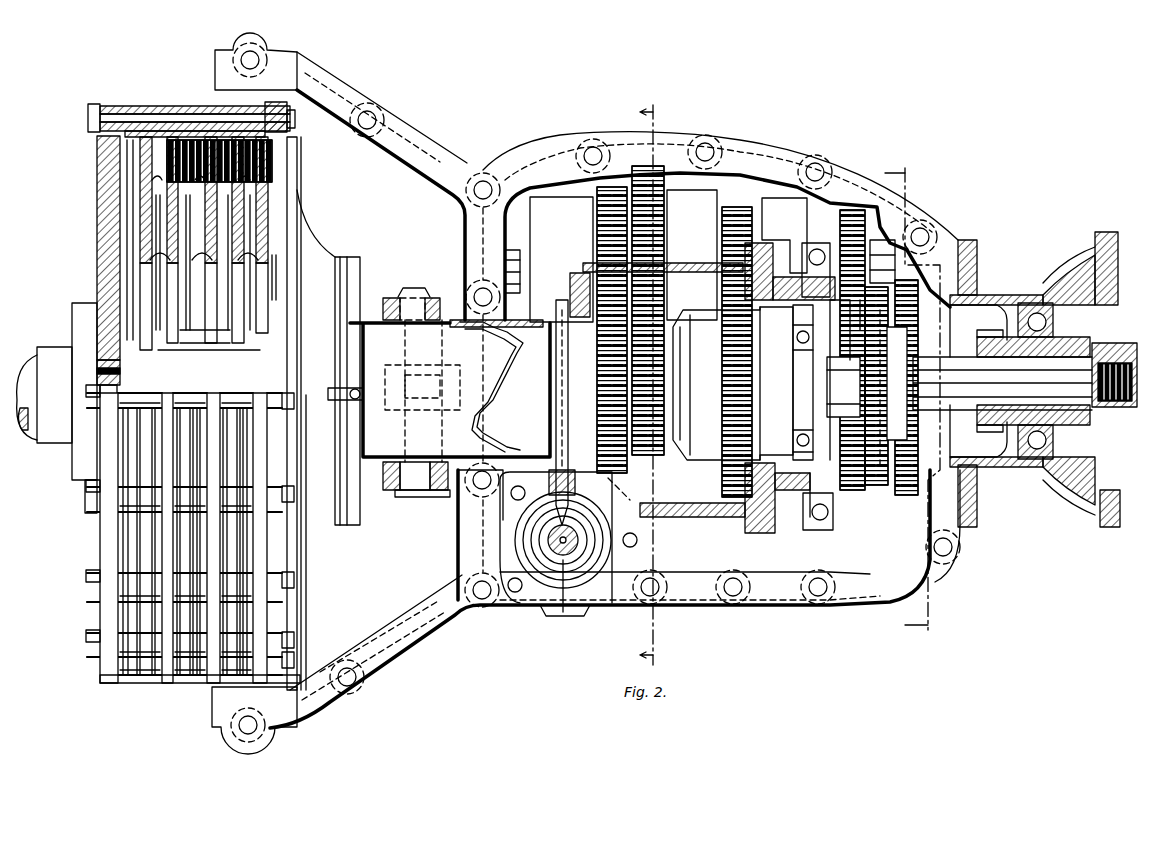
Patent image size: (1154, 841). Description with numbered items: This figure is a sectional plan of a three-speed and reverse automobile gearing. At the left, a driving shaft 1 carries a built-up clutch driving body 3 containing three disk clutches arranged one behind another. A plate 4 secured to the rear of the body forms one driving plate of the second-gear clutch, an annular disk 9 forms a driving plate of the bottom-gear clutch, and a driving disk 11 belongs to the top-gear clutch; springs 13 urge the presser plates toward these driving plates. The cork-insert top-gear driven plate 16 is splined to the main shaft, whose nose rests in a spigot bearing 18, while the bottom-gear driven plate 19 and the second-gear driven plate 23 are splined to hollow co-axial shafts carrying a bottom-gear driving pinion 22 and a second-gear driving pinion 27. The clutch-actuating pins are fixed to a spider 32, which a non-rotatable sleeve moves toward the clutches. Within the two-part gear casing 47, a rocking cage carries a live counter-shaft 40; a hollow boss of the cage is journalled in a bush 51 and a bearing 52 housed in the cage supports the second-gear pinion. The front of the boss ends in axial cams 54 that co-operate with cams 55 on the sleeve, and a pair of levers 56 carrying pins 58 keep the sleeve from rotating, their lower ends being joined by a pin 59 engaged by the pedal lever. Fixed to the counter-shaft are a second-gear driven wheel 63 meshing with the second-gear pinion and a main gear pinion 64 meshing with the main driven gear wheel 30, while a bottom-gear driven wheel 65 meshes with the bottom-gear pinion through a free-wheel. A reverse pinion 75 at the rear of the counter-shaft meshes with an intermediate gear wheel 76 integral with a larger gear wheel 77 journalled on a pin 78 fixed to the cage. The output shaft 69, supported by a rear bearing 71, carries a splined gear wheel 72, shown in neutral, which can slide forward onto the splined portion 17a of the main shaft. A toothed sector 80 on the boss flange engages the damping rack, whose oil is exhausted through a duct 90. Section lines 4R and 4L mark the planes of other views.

The driving shaft 1 is at (24, 432).
The plate 4 is at (256, 112).
The annular disk 9 is at (216, 112).
The driving disk 11 is at (178, 114).
The springs 13 is at (200, 130).
The top-gear driven plate 16 is at (156, 279).
The spigot bearing 18 is at (97, 362).
The bottom-gear driven plate 19 is at (160, 260).
The second-gear driven plate 23 is at (252, 270).
The spider 32 is at (302, 217).
The gear casing 47 is at (775, 150).
The bush 51 is at (460, 300).
The bearing 52 is at (400, 328).
The axial cams 54 is at (512, 360).
The cams 55 is at (500, 380).
The levers 56 is at (388, 297).
The pins 58 is at (413, 300).
The pin 59 is at (405, 418).
The second-gear driven wheel 63 is at (597, 192).
The bottom-gear driven wheel 65 is at (632, 180).
The bottom-gear driving pinion 22 is at (652, 455).
The second-gear driving pinion 27 is at (620, 478).
The main gear pinion 64 is at (732, 210).
The main driven gear wheel 30 is at (722, 491).
The counter-shaft 40 is at (875, 236).
The reverse pinion 75 is at (853, 210).
The intermediate gear wheel 76 is at (855, 485).
The splined gear wheel 72 is at (873, 485).
The larger gear wheel 77 is at (905, 492).
The splined portion 17a is at (827, 390).
The pin 78 is at (940, 425).
The rear bearing 71 is at (1053, 316).
The output shaft 69 is at (1083, 358).
The toothed sector 80 is at (552, 500).
The duct 90 is at (552, 536).
The clutch driving body 3 is at (912, 396).
The section line 4R is at (653, 378).
The section line 4L is at (560, 655).